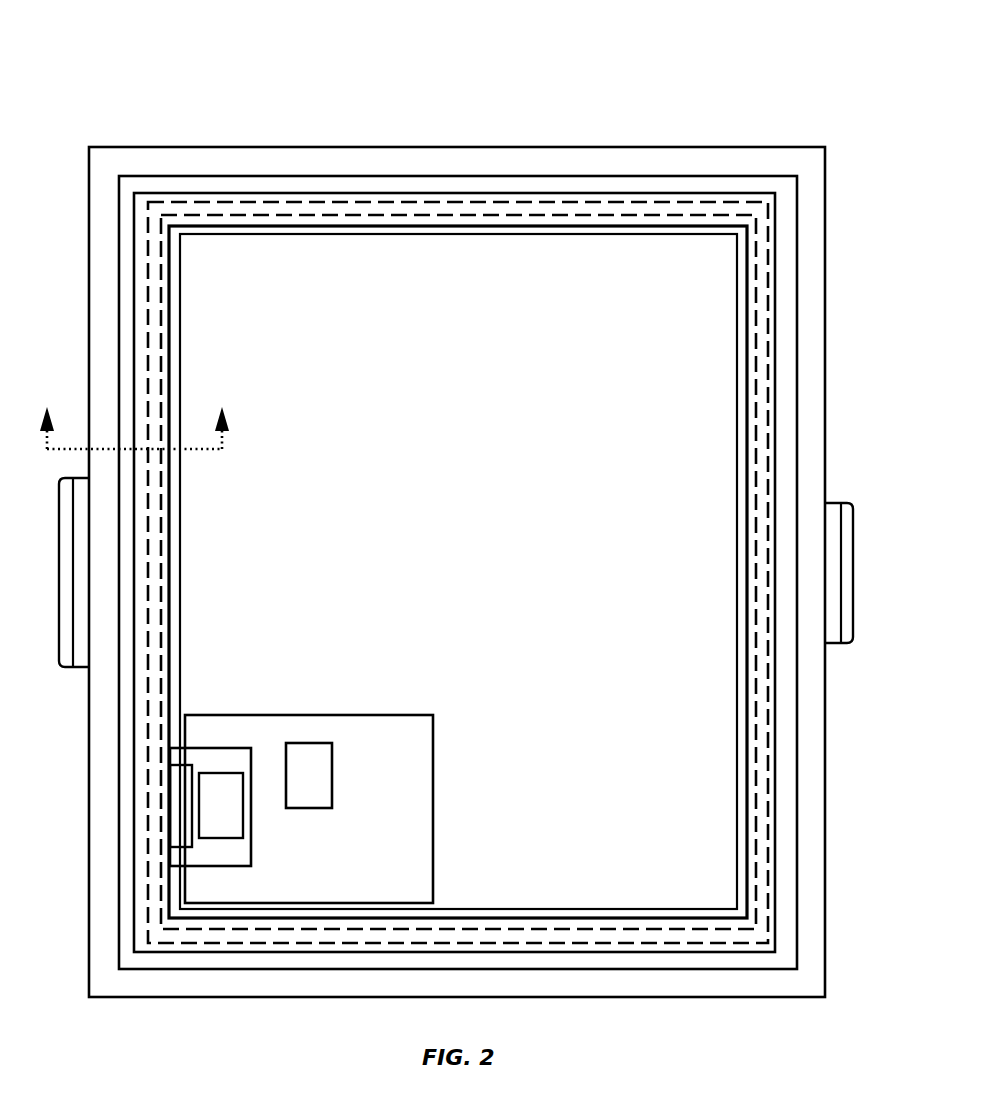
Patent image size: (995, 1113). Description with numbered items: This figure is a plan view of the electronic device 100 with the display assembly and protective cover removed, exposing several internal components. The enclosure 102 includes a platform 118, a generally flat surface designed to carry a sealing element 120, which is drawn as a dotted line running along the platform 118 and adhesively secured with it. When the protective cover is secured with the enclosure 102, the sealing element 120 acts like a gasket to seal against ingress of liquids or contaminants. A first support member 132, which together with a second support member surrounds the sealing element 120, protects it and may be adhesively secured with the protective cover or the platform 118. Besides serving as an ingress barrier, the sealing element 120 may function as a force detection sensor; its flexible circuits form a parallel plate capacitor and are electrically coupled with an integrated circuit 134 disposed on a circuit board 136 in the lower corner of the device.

The electronic device 100 is at (672, 68).
The enclosure 102 is at (137, 147).
The platform 118 is at (180, 362).
The sealing element 120 is at (161, 276).
The first support member 132 is at (169, 313).
The integrated circuit 134 is at (331, 765).
The circuit board 136 is at (325, 855).